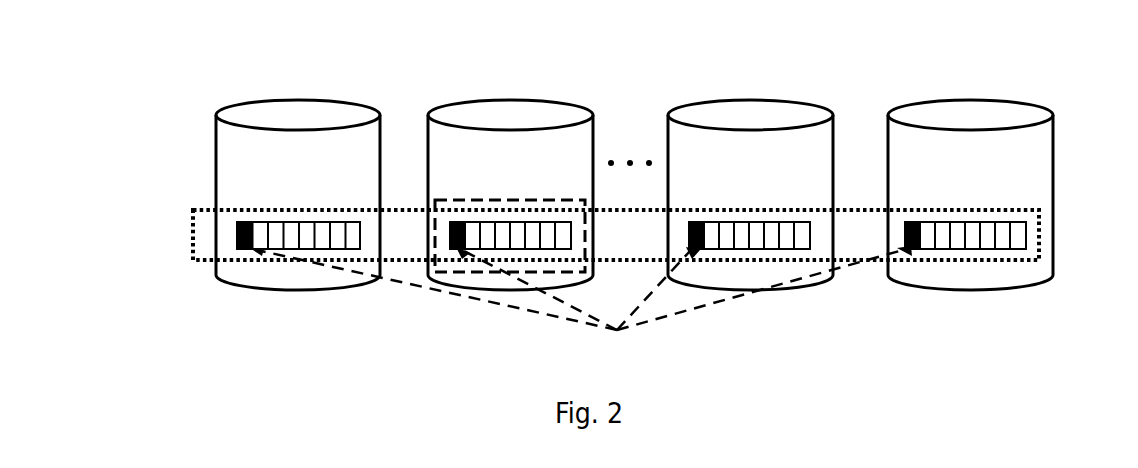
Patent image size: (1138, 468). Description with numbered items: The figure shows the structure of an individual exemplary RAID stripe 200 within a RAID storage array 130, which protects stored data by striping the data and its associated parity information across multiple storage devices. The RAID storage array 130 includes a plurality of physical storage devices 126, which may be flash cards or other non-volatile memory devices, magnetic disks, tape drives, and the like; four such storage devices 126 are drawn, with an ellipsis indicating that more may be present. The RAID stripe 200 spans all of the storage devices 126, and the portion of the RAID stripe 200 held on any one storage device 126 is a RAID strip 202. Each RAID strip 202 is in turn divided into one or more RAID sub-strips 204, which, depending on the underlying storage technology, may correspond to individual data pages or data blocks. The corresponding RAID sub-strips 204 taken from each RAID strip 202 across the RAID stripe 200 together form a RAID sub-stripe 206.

The RAID storage array 130 is at (576, 74).
The storage device 126 is at (1020, 192).
The RAID stripe 200 is at (193, 210).
The RAID strip 202 is at (457, 202).
The RAID sub-strip 204 is at (915, 221).
The RAID sub-stripe 206 is at (710, 359).